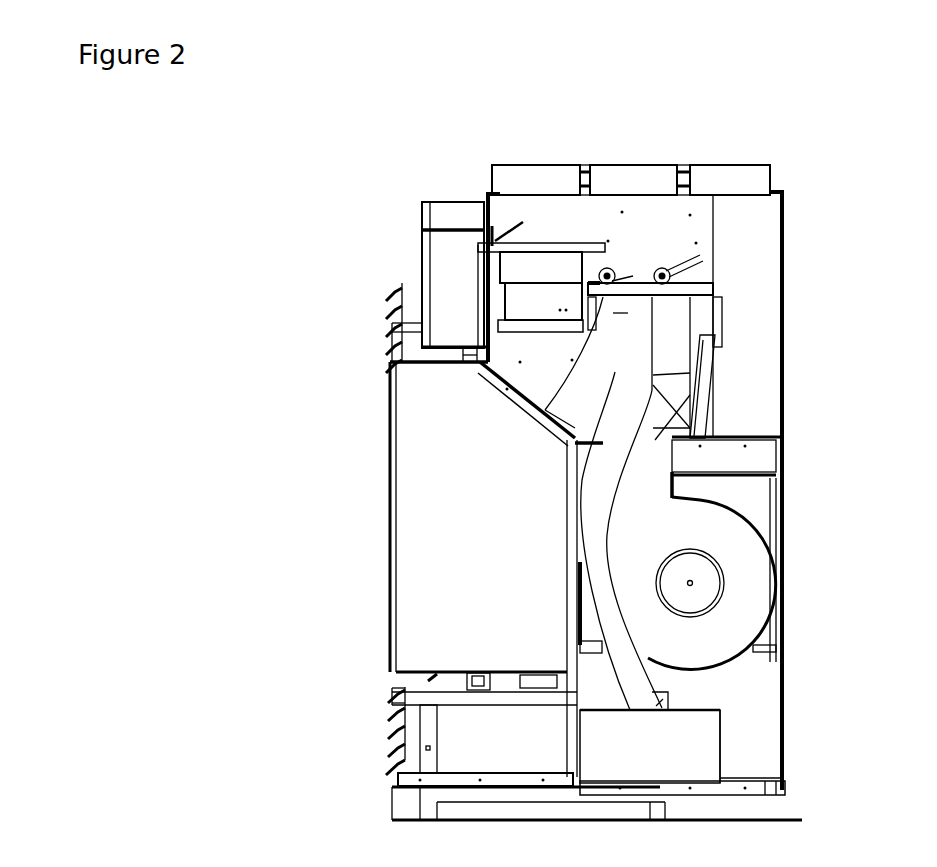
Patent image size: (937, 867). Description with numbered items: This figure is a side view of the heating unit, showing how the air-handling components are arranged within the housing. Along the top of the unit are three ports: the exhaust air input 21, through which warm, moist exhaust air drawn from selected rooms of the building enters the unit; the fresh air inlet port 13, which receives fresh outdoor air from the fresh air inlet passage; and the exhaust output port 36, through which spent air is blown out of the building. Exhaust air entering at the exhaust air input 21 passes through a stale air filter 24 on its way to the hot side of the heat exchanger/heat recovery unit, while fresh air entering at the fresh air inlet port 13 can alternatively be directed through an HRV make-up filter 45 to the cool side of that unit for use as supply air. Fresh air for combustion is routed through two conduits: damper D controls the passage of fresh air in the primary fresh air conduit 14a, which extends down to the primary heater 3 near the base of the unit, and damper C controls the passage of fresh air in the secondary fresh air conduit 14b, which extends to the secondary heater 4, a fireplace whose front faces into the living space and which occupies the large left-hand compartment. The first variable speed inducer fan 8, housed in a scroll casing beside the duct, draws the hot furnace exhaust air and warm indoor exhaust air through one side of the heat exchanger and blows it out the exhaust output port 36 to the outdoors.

The exhaust air input 21 is at (535, 172).
The fresh air inlet port 13 is at (622, 176).
The exhaust output port 36 is at (729, 184).
The stale air filter 24 is at (420, 228).
The HRV make-up filter 45 is at (535, 268).
The secondary heater 4 is at (446, 392).
The primary fresh air conduit 14a is at (641, 388).
The secondary fresh air conduit 14b is at (572, 394).
The first variable speed inducer fan 8 is at (752, 567).
The primary heater 3 is at (666, 752).
The damper C is at (616, 262).
The damper D is at (678, 262).